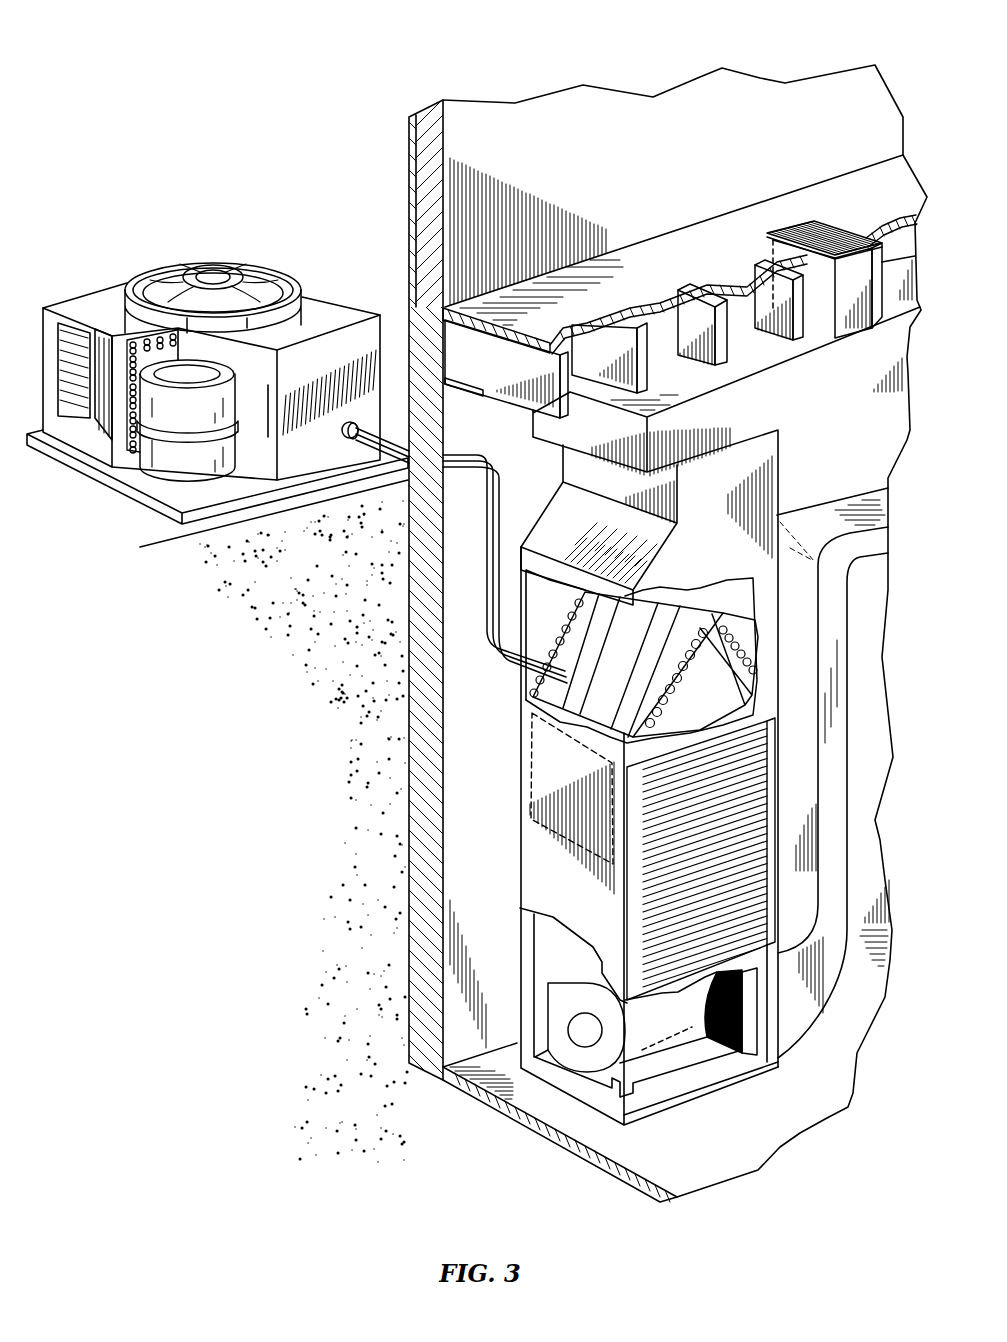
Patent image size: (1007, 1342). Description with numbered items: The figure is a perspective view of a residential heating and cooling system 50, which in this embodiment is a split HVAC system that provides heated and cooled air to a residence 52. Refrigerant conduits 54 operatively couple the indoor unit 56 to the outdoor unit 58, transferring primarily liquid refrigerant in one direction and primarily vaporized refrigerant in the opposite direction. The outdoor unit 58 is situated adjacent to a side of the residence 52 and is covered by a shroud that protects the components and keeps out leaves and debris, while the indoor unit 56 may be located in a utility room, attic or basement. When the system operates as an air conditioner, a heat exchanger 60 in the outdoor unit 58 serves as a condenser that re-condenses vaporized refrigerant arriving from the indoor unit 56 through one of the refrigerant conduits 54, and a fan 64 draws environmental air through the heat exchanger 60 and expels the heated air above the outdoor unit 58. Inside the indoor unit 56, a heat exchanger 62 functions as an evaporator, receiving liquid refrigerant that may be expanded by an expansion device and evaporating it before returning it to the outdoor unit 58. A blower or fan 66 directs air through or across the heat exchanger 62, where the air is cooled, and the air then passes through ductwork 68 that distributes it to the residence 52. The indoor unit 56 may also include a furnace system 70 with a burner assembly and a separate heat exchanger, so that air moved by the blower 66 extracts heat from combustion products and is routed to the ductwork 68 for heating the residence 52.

The residential heating and cooling system 50 is at (328, 42).
The residence 52 is at (568, 103).
The refrigerant conduits 54 is at (487, 520).
The indoor unit 56 is at (504, 828).
The outdoor unit 58 is at (217, 385).
The heat exchanger 60 is at (134, 347).
The heat exchanger 62 is at (593, 692).
The fan 64 is at (240, 273).
The blower or fan 66 is at (557, 1050).
The ductwork 68 is at (857, 298).
The furnace system 70 is at (532, 742).